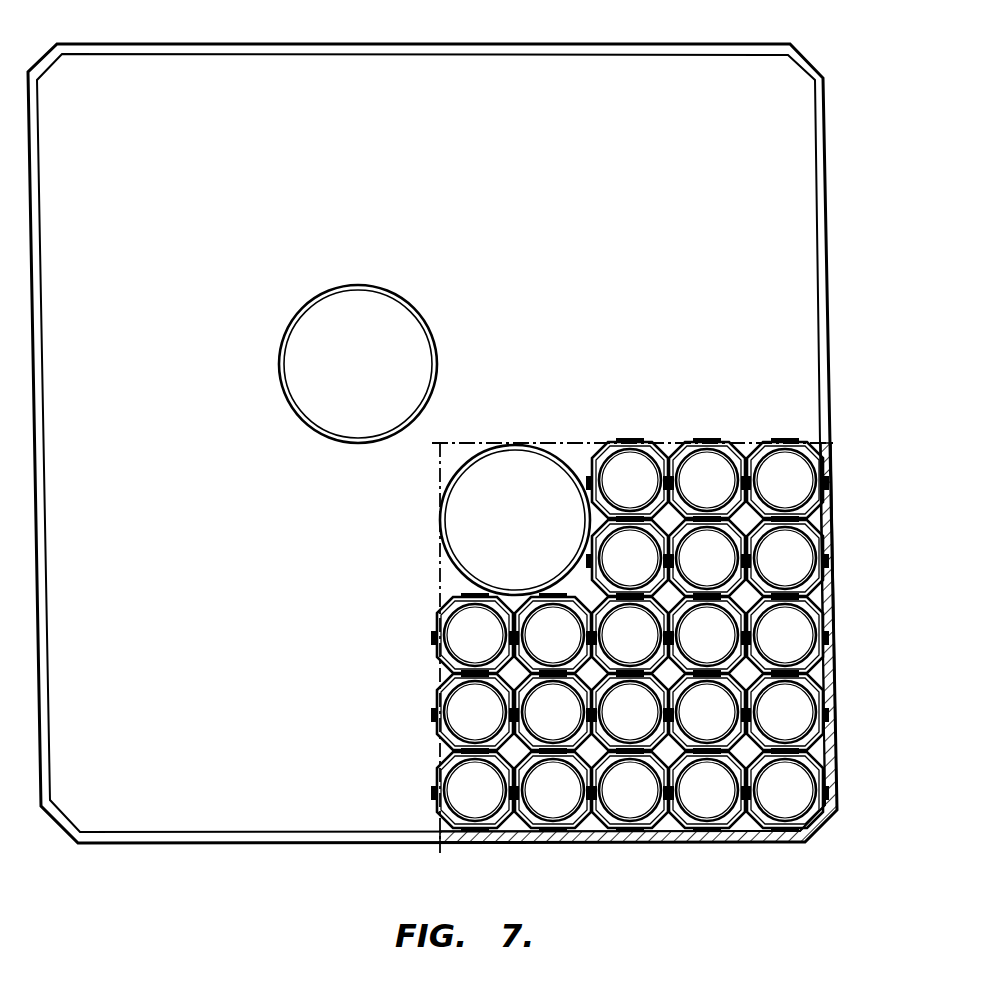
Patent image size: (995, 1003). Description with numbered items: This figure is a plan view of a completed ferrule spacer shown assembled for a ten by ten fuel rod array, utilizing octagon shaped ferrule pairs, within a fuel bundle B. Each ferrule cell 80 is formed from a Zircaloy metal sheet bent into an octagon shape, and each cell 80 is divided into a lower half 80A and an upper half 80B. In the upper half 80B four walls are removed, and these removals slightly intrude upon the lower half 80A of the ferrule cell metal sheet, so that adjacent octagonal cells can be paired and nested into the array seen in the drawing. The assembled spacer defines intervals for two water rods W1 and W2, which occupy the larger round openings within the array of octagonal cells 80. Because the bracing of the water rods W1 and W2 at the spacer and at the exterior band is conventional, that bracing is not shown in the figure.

The fuel bundle B is at (590, 44).
The water rod W1 is at (363, 381).
The water rod W2 is at (520, 540).
The cell 80 is at (835, 490).
The lower half of cell 80A is at (833, 573).
The upper half of cell 80B is at (833, 450).